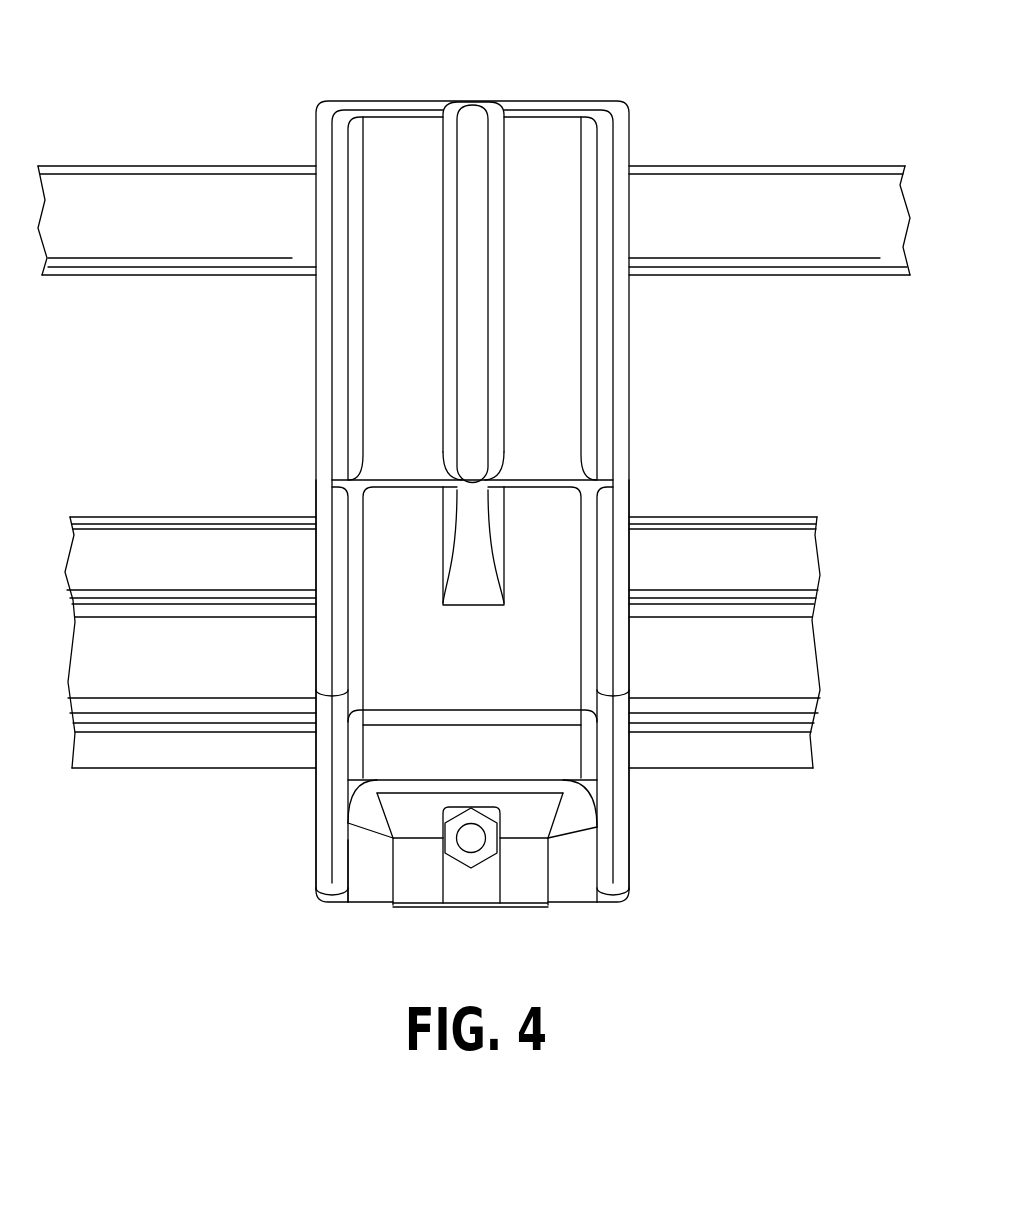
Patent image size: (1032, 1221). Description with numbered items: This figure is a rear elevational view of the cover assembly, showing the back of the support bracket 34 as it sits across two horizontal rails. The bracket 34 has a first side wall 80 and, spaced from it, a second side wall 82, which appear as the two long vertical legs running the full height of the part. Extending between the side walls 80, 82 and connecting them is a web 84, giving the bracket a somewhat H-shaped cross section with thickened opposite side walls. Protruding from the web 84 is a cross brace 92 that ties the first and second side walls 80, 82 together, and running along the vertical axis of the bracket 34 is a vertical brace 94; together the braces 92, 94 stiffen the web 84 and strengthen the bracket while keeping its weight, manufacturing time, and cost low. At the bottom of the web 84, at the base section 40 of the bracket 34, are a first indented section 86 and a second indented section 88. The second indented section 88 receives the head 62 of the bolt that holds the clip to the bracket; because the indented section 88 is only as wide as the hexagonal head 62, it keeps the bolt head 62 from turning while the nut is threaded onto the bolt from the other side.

The bracket 34 is at (481, 501).
The base section 40 is at (558, 758).
The head section 62 is at (465, 817).
The first side wall 80 is at (323, 845).
The second side wall 82 is at (620, 847).
The web 84 is at (372, 888).
The first indented section 86 is at (530, 889).
The second indented section 88 is at (473, 889).
The cross brace 92 is at (550, 452).
The vertical brace 94 is at (465, 297).